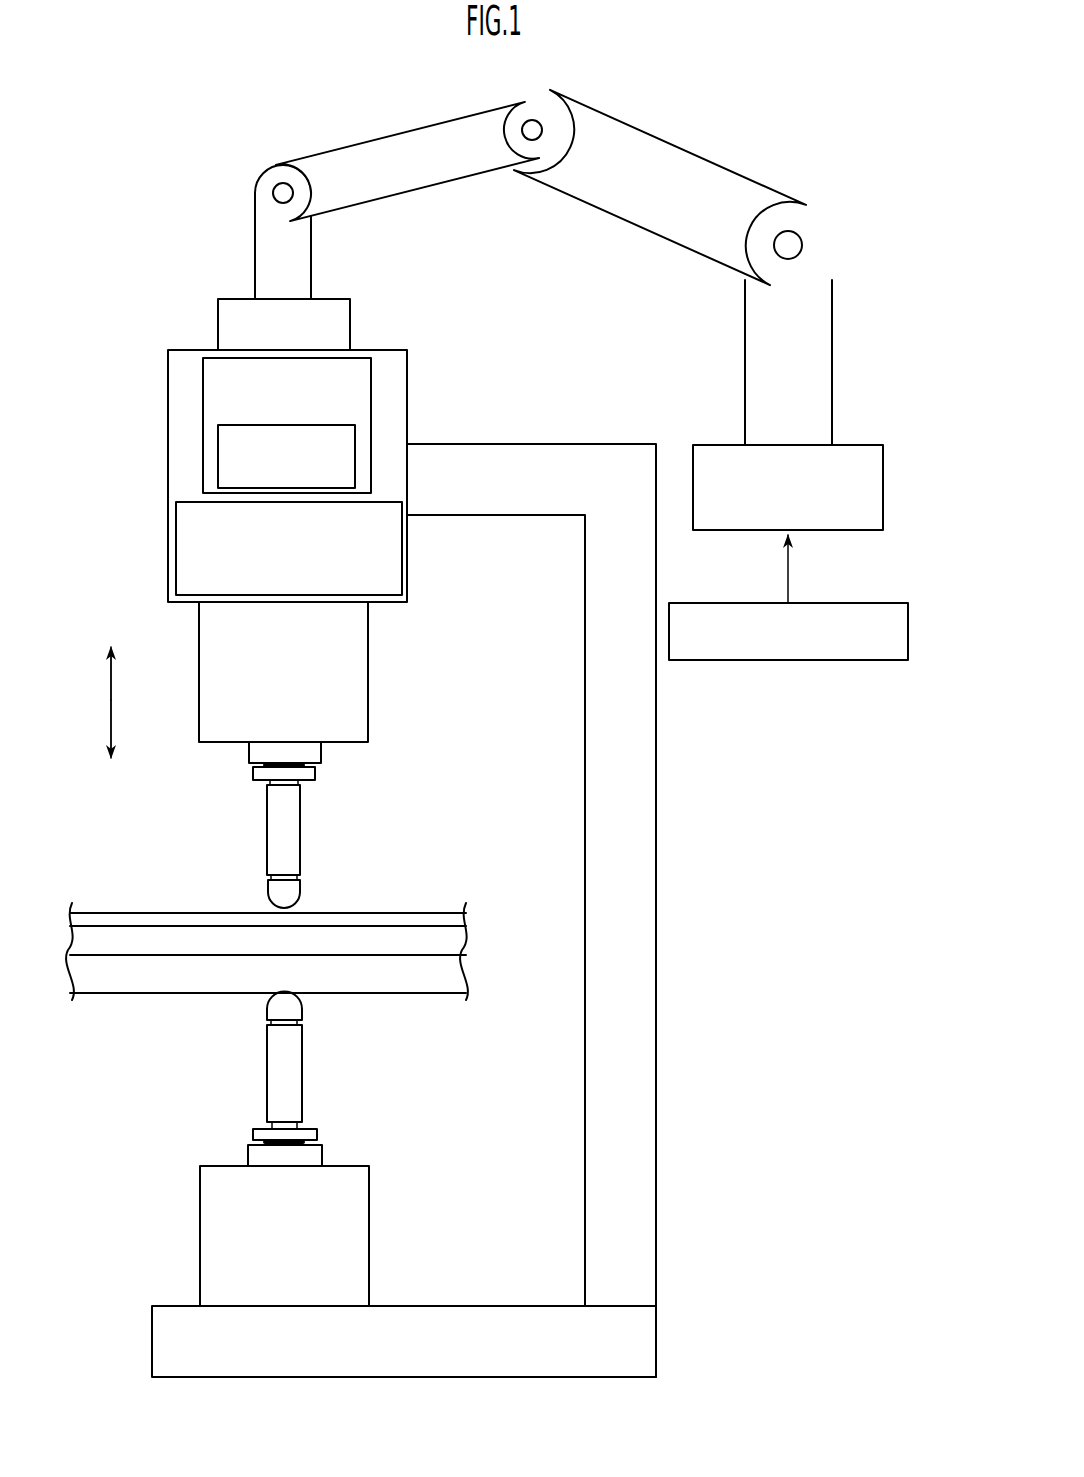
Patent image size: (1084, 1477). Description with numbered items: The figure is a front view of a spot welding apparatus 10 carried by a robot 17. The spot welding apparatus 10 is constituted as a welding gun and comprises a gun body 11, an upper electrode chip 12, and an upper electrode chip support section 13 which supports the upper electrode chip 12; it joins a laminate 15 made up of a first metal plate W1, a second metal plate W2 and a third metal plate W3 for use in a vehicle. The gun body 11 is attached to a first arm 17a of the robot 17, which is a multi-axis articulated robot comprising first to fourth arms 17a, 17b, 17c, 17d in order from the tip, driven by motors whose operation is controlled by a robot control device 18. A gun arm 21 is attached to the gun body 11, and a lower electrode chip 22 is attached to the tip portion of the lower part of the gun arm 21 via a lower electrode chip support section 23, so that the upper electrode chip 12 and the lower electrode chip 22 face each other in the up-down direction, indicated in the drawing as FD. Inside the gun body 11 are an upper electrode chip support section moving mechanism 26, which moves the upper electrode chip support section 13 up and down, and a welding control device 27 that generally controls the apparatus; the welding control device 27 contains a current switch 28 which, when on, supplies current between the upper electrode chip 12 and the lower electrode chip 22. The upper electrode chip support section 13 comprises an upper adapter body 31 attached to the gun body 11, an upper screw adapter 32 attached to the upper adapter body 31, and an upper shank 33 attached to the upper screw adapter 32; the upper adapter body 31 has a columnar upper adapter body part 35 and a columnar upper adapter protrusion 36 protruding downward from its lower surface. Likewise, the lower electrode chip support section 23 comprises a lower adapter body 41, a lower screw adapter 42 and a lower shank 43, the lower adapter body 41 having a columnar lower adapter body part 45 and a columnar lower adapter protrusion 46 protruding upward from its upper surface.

The spot welding apparatus 10 is at (383, 833).
The gun body 11 is at (413, 567).
The upper electrode chip 12 is at (296, 890).
The upper electrode chip support section 13 is at (315, 755).
The laminate 15 is at (267, 934).
The robot 17 is at (554, 300).
The first arm 17a is at (331, 312).
The second arm 17b is at (375, 152).
The third arm 17c is at (620, 140).
The fourth arm 17d is at (832, 363).
The robot control device 18 is at (908, 632).
The gun arm 21 is at (562, 460).
The lower electrode chip 22 is at (272, 1008).
The lower electrode chip support section 23 is at (305, 1149).
The upper electrode chip support section moving mechanism 26 is at (176, 540).
The welding control device 27 is at (203, 396).
The current switch 28 is at (218, 449).
The upper adapter body 31 is at (327, 672).
The upper screw adapter 32 is at (253, 774).
The upper shank 33 is at (296, 835).
The upper adapter body part 35 is at (357, 701).
The upper adapter protrusion 36 is at (249, 750).
The lower adapter body 41 is at (372, 1251).
The lower screw adapter 42 is at (310, 1135).
The lower shank 43 is at (296, 1092).
The lower adapter body part 45 is at (355, 1203).
The lower adapter protrusion 46 is at (320, 1157).
The first metal plate W1 is at (210, 920).
The second metal plate W2 is at (153, 940).
The third metal plate W3 is at (140, 978).
The feed direction FD is at (110, 703).